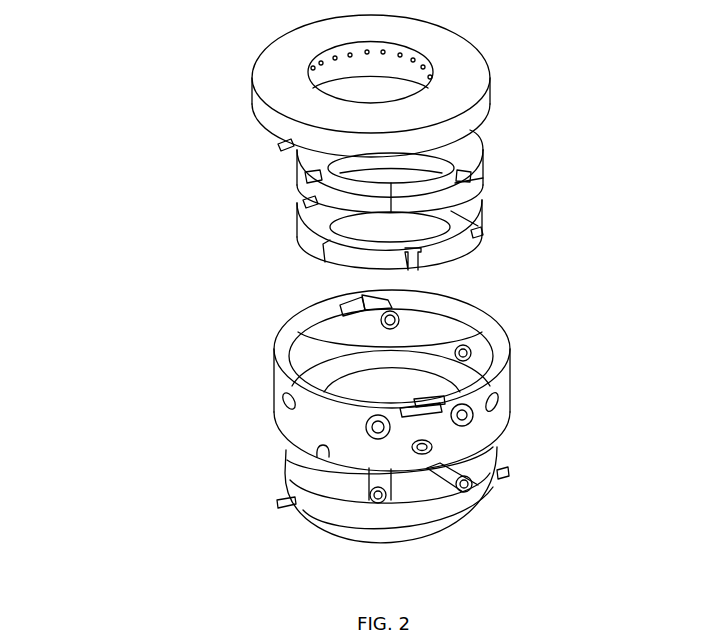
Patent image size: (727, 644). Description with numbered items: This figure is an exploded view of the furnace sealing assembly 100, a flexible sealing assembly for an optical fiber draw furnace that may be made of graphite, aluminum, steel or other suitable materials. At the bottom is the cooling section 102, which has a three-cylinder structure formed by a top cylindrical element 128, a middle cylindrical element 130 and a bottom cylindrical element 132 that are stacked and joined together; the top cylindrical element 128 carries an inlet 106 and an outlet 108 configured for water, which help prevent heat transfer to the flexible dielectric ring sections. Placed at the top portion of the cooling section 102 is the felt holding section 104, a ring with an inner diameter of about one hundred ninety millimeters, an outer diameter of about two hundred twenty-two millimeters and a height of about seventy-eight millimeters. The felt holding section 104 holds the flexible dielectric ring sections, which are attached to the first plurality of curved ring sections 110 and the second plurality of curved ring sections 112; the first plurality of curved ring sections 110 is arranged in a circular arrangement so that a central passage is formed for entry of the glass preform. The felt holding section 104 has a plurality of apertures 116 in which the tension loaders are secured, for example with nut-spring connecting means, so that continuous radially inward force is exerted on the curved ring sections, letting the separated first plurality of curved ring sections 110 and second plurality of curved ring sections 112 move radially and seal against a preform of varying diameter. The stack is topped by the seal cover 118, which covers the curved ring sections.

The furnace sealing assembly 100 is at (152, 63).
The cooling section 102 is at (493, 533).
The felt holding section 104 is at (510, 387).
The inlet 106 is at (365, 502).
The outlet 108 is at (433, 505).
The first plurality of curved ring sections 110 is at (300, 157).
The second plurality of curved ring sections 112 is at (473, 234).
The plurality of apertures 116 is at (400, 316).
The seal cover 118 is at (450, 128).
The top cylindrical element 128 is at (348, 466).
The middle cylindrical element 130 is at (307, 509).
The bottom cylindrical element 132 is at (442, 523).